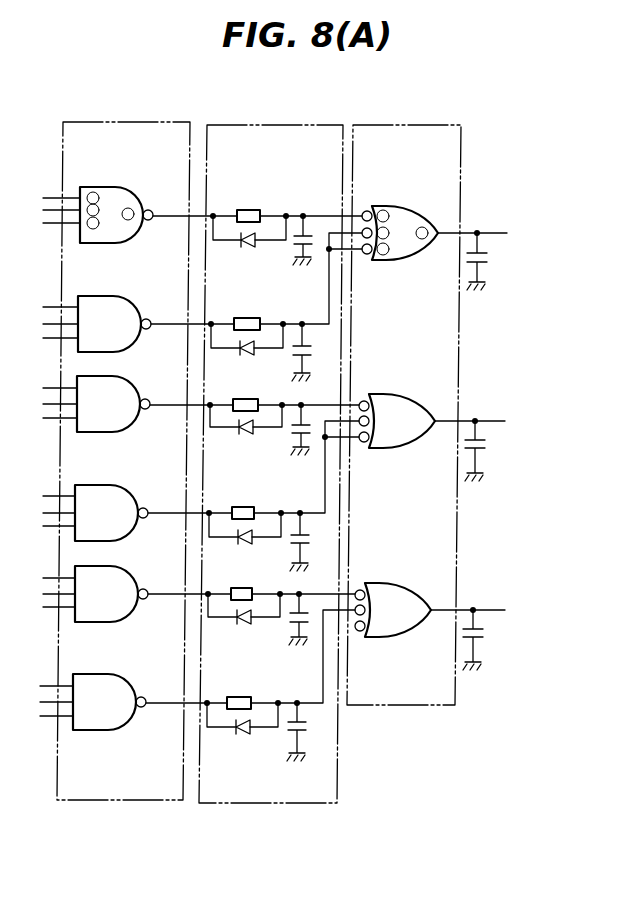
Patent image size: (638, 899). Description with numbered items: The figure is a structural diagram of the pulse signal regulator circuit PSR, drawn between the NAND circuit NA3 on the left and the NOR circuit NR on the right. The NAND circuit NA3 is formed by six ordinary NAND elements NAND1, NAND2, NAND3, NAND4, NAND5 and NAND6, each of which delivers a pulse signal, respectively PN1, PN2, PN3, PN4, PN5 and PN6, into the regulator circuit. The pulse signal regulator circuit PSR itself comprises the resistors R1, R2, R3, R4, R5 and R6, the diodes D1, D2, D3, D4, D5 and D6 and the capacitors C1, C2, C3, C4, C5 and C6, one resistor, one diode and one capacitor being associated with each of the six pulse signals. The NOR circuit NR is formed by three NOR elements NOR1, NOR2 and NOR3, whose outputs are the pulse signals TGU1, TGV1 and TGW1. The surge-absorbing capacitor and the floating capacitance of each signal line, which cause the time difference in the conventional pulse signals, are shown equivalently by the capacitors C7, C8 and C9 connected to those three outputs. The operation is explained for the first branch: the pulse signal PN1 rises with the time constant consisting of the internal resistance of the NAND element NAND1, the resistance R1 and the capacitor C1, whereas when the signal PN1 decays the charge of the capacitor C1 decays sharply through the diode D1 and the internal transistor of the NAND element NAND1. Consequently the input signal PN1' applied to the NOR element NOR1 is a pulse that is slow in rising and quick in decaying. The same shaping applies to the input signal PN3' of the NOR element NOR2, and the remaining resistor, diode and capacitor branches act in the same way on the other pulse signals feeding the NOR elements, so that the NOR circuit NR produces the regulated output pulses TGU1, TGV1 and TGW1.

The NAND circuit NA3 is at (113, 122).
The pulse signal regulator circuit PSR is at (262, 125).
The NOR circuit NR is at (378, 125).
The NAND element NAND1 is at (105, 186).
The NAND element NAND2 is at (99, 296).
The NAND element NAND3 is at (83, 376).
The NAND element NAND4 is at (97, 485).
The NAND element NAND5 is at (83, 566).
The NAND element NAND6 is at (94, 673).
The pulse signal PN1 is at (180, 196).
The pulse signal PN2 is at (167, 321).
The pulse signal PN3 is at (179, 421).
The pulse signal PN4 is at (164, 511).
The pulse signal PN5 is at (160, 585).
The pulse signal PN6 is at (156, 702).
The input signal of NOR element NOR1 PN1' is at (332, 195).
The input signal of NOR element NOR2 PN3' is at (328, 392).
The resistor R1 is at (248, 209).
The resistor R2 is at (248, 317).
The resistor R3 is at (250, 398).
The resistor R4 is at (244, 507).
The resistor R5 is at (236, 586).
The resistor R6 is at (241, 696).
The diode D1 is at (246, 248).
The diode D2 is at (244, 354).
The diode D3 is at (238, 432).
The diode D4 is at (242, 542).
The diode D5 is at (242, 622).
The diode D6 is at (238, 736).
The capacitor C1 is at (290, 250).
The capacitor C2 is at (292, 348).
The capacitor C3 is at (290, 434).
The capacitor C4 is at (290, 544).
The capacitor C5 is at (286, 624).
The capacitor C6 is at (286, 738).
The NOR element NOR1 is at (401, 206).
The NOR element NOR2 is at (395, 394).
The NOR element NOR3 is at (389, 583).
The pulse signal TGU1 is at (493, 231).
The pulse signal TGV1 is at (483, 419).
The pulse signal TGW1 is at (483, 610).
The capacitor C7 is at (491, 257).
The capacitor C8 is at (485, 446).
The capacitor C9 is at (478, 636).